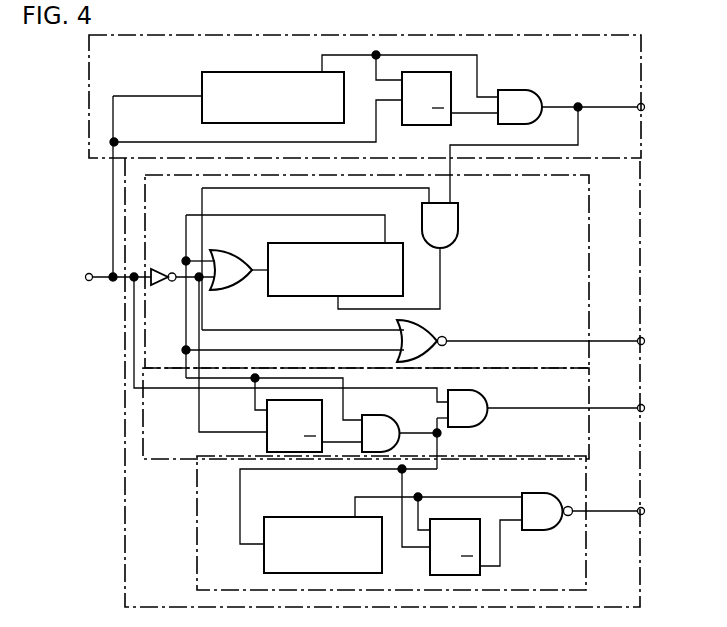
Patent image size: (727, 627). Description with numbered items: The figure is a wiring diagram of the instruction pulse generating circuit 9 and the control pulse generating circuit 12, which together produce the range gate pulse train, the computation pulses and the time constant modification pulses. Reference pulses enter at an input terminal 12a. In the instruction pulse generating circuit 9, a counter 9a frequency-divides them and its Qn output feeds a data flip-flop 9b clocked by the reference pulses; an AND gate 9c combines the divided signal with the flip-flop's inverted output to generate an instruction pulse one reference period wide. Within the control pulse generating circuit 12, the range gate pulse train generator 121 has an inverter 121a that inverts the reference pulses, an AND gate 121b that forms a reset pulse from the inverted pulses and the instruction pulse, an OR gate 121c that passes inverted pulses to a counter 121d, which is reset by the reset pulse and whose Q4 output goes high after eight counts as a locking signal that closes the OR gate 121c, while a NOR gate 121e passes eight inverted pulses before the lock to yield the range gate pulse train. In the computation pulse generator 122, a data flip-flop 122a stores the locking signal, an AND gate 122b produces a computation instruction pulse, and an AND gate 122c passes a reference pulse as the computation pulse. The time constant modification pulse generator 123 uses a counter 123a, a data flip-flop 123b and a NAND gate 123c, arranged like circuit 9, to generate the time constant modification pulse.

The instruction pulse generating circuit 9 is at (545, 38).
The counter 9a is at (263, 72).
The data flip-flop 9b is at (438, 126).
The AND gate 9c is at (513, 90).
The control pulse generating circuit 12 is at (641, 238).
The input terminal 12a is at (85, 277).
The range gate pulse train generator 121 is at (590, 257).
The inverter 121a is at (162, 268).
The AND gate 121b is at (458, 226).
The OR gate 121c is at (238, 242).
The counter 121d is at (344, 248).
The NOR gate 121e is at (433, 337).
The computation pulse generator 122 is at (588, 384).
The data flip-flop 122a is at (262, 426).
The AND gate 122b is at (369, 415).
The AND gate 122c is at (482, 395).
The time constant modification pulse generator 123 is at (586, 470).
The counter 123a is at (310, 517).
The data flip-flop 123b is at (486, 567).
The NAND gate 123c is at (524, 478).